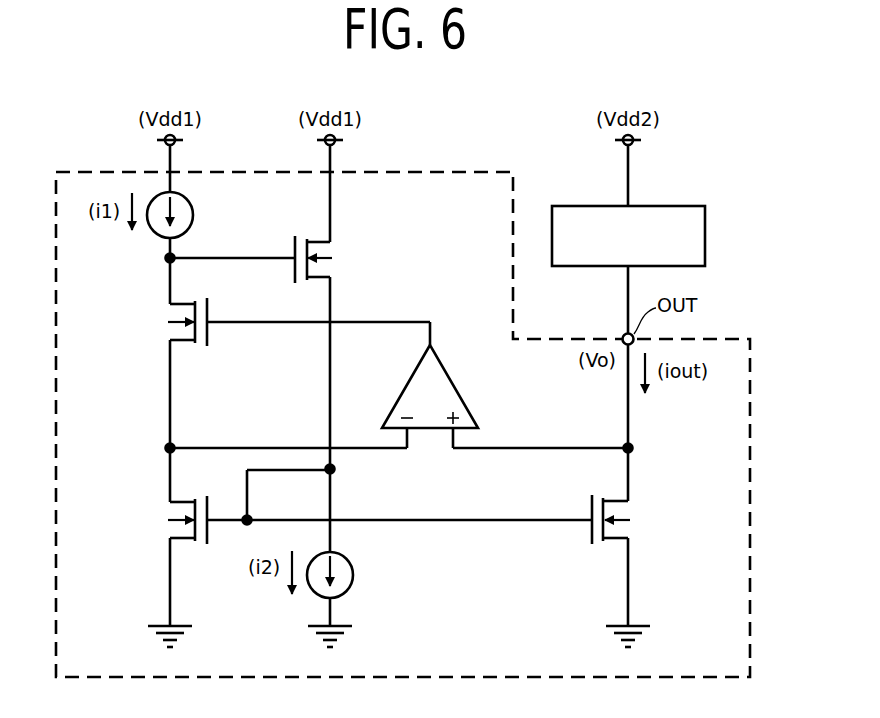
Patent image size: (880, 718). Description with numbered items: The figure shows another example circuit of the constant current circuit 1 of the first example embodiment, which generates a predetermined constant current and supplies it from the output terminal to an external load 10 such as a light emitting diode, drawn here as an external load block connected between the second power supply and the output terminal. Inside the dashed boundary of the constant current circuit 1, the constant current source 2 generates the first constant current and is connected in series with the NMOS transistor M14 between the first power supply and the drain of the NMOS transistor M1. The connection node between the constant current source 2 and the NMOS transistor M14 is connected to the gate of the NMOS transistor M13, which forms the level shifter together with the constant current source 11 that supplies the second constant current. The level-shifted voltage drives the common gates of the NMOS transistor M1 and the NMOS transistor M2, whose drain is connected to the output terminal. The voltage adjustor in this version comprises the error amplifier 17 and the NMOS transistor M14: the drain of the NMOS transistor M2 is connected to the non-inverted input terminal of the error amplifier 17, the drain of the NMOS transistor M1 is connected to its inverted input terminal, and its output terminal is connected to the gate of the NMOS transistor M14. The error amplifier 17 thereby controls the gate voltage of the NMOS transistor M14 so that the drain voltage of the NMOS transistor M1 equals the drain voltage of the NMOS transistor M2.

The constant current circuit 1 is at (470, 164).
The constant current source 2 is at (194, 216).
The external load 10 is at (706, 237).
The constant current source 11 is at (354, 577).
The error amplifier 17 is at (462, 392).
The NMOS transistor M1 is at (360, 507).
The NMOS transistor M2 is at (631, 519).
The NMOS transistor M13 is at (339, 394).
The NMOS transistor M14 is at (271, 322).